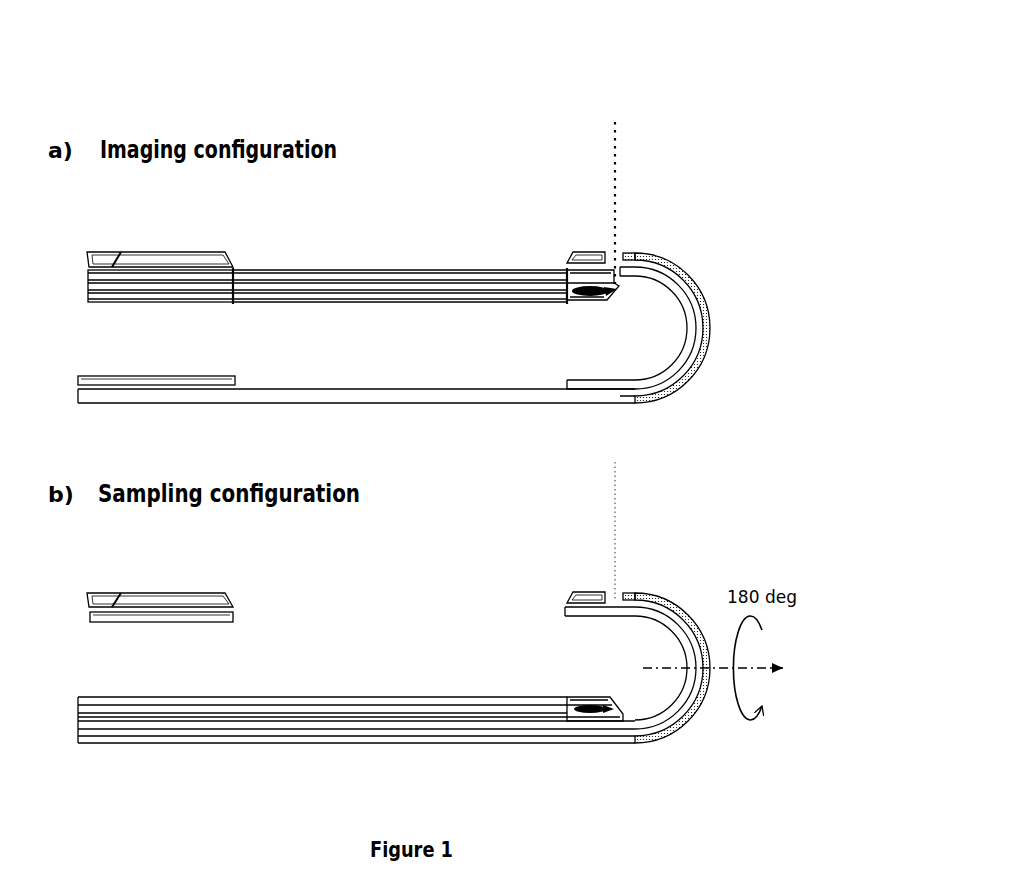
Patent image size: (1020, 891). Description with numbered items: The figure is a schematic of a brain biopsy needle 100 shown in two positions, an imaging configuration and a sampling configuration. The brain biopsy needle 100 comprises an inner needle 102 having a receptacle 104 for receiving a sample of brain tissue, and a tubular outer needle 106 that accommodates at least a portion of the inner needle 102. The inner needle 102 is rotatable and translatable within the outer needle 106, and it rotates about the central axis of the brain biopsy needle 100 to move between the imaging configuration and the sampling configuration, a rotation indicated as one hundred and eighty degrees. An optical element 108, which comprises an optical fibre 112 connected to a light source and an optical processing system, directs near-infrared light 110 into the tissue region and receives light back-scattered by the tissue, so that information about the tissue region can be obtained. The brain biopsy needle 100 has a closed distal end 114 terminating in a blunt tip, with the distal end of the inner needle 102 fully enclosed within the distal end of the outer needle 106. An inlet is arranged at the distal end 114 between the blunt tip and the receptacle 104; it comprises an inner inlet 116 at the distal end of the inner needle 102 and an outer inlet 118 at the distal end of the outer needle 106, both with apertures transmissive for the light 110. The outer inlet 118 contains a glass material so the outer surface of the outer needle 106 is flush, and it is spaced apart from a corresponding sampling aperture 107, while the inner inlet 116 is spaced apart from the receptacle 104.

The brain biopsy needle 100 is at (560, 125).
The inner needle 102 is at (118, 255).
The receptacle 104 is at (356, 501).
The outer needle 106 is at (165, 371).
The sampling aperture 107 is at (245, 252).
The optical element 108 is at (619, 295).
The near-infrared light 110 is at (622, 164).
The optical fibre 112 is at (200, 300).
The closed distal end 114 is at (656, 406).
The inner inlet 116 is at (620, 282).
The outer inlet 118 is at (610, 257).